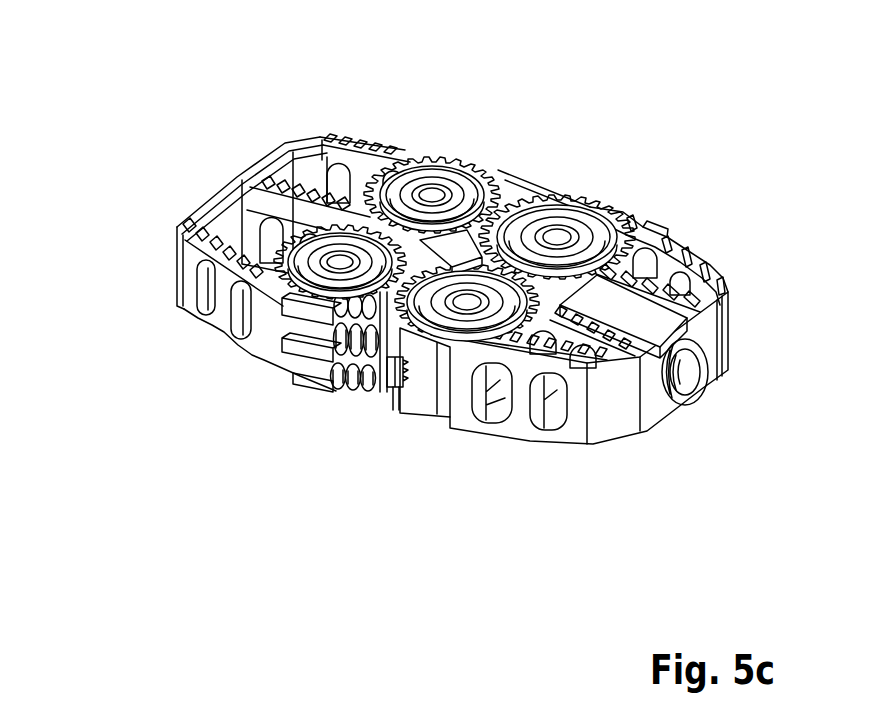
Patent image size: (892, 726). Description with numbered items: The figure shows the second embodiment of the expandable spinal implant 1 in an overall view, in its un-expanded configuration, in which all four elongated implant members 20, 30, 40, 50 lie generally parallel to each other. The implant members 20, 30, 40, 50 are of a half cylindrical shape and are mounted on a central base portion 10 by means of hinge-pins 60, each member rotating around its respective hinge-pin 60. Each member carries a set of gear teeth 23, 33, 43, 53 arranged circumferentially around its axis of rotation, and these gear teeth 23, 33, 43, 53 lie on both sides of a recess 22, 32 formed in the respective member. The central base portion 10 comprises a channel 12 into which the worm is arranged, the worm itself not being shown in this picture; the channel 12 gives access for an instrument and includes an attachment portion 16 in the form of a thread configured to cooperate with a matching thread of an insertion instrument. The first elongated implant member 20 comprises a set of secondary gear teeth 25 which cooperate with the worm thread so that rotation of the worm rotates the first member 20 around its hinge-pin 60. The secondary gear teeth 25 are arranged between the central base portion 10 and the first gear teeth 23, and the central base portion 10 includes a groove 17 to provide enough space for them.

The expandable spinal implant 1 is at (136, 113).
The central base portion 10 is at (397, 386).
The channel 12 is at (690, 370).
The attachment portion 16 is at (708, 392).
The groove 17 is at (260, 352).
The first elongated implant member 20 is at (265, 258).
The recess 22 is at (313, 360).
The gear teeth 23 is at (332, 370).
The secondary gear teeth 25 is at (300, 332).
The second elongated implant member 30 is at (603, 425).
The recess 32 is at (436, 393).
The gear teeth 33 is at (393, 397).
The third elongated implant member 40 is at (645, 224).
The gear teeth 43 is at (527, 203).
The fourth elongated implant member 50 is at (370, 140).
The gear teeth 53 is at (500, 172).
The hinge-pin 60 is at (430, 190).